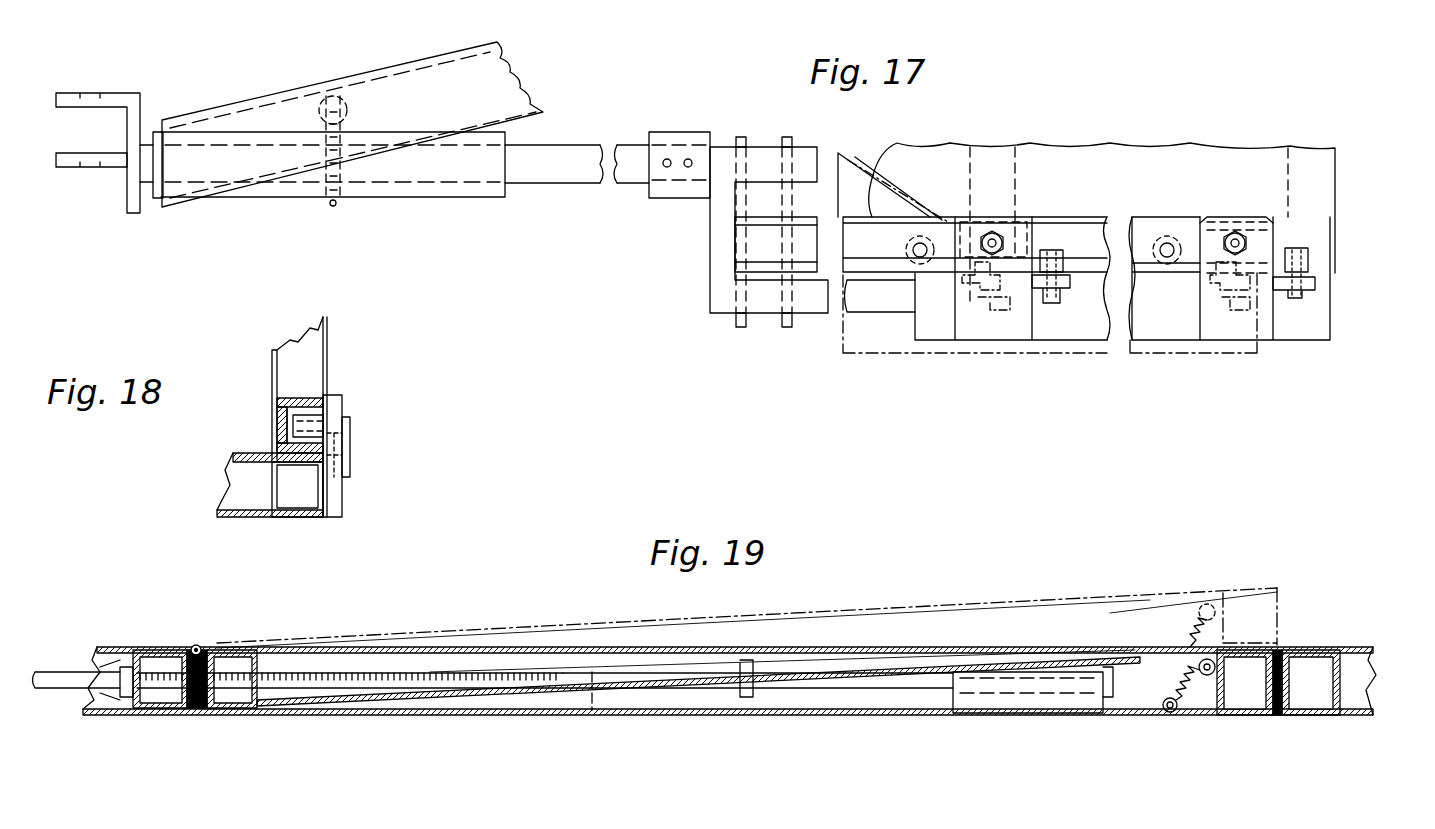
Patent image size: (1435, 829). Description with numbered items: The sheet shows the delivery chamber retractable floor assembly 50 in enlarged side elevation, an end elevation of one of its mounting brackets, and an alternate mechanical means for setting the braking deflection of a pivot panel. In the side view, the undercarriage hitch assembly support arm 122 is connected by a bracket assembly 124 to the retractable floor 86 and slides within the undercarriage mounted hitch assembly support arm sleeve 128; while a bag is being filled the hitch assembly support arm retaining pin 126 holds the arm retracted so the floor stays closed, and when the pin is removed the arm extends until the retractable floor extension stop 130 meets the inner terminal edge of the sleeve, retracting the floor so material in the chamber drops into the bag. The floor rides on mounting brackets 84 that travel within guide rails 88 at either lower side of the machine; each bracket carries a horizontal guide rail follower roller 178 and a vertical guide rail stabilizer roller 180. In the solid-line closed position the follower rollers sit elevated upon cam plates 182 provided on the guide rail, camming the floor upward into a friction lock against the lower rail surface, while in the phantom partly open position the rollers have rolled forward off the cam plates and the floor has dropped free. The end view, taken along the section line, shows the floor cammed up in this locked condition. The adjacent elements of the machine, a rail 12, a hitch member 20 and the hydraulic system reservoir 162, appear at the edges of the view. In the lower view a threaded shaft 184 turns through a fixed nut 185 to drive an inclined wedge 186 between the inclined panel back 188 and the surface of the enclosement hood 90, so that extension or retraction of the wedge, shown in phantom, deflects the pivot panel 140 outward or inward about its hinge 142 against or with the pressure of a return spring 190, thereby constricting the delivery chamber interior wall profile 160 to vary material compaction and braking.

In FIG. 17, the rail 12 is at (363, 72).
In FIG. 17, the mounting bracket 20 is at (118, 93).
In FIG. 17, the delivery chamber retractable floor assembly 50 is at (1285, 122).
In FIG. 17, the mounting bracket 84 is at (948, 358).
In FIG. 18, the mounting bracket 84 is at (355, 396).
In FIG. 17, the retractable floor 86 is at (1033, 352).
In FIG. 18, the retractable floor 86 is at (243, 518).
In FIG. 17, the guide rail 88 is at (770, 256).
In FIG. 18, the guide rail 88 is at (287, 400).
In FIG. 17, the enclosement hood 90 is at (1175, 142).
In FIG. 19, the enclosement hood 90 is at (875, 715).
In FIG. 17, the undercarriage hitch assembly support arm 122 is at (577, 172).
In FIG. 17, the bracket assembly 124 is at (717, 238).
In FIG. 17, the hitch assembly support arm retaining pin 126 is at (326, 206).
In FIG. 17, the hitch assembly support arm sleeve 128 is at (452, 190).
In FIG. 17, the retractable floor extension stop 130 is at (680, 186).
In FIG. 19, the pivot panel 140 is at (712, 610).
In FIG. 19, the hinge 142 is at (196, 645).
In FIG. 18, the delivery chamber interior wall profile 160 is at (272, 370).
In FIG. 19, the delivery chamber interior wall profile 160 is at (163, 652).
In FIG. 17, the hydraulic system reservoir 162 is at (843, 185).
In FIG. 17, the horizontal guide rail follower roller 178 is at (992, 232).
In FIG. 18, the horizontal guide rail follower roller 178 is at (318, 414).
In FIG. 17, the vertical guide rail stabilizer roller 180 is at (1057, 256).
In FIG. 18, the vertical guide rail stabilizer roller 180 is at (346, 443).
In FIG. 17, the cam plate 182 is at (1015, 212).
In FIG. 18, the cam plate 182 is at (277, 424).
In FIG. 19, the threaded shaft 184 is at (262, 672).
In FIG. 19, the fixed nut 185 is at (120, 676).
In FIG. 19, the inclined wedge 186 is at (680, 697).
In FIG. 19, the inclined panel back 188 is at (775, 690).
In FIG. 19, the return spring 190 is at (1188, 705).